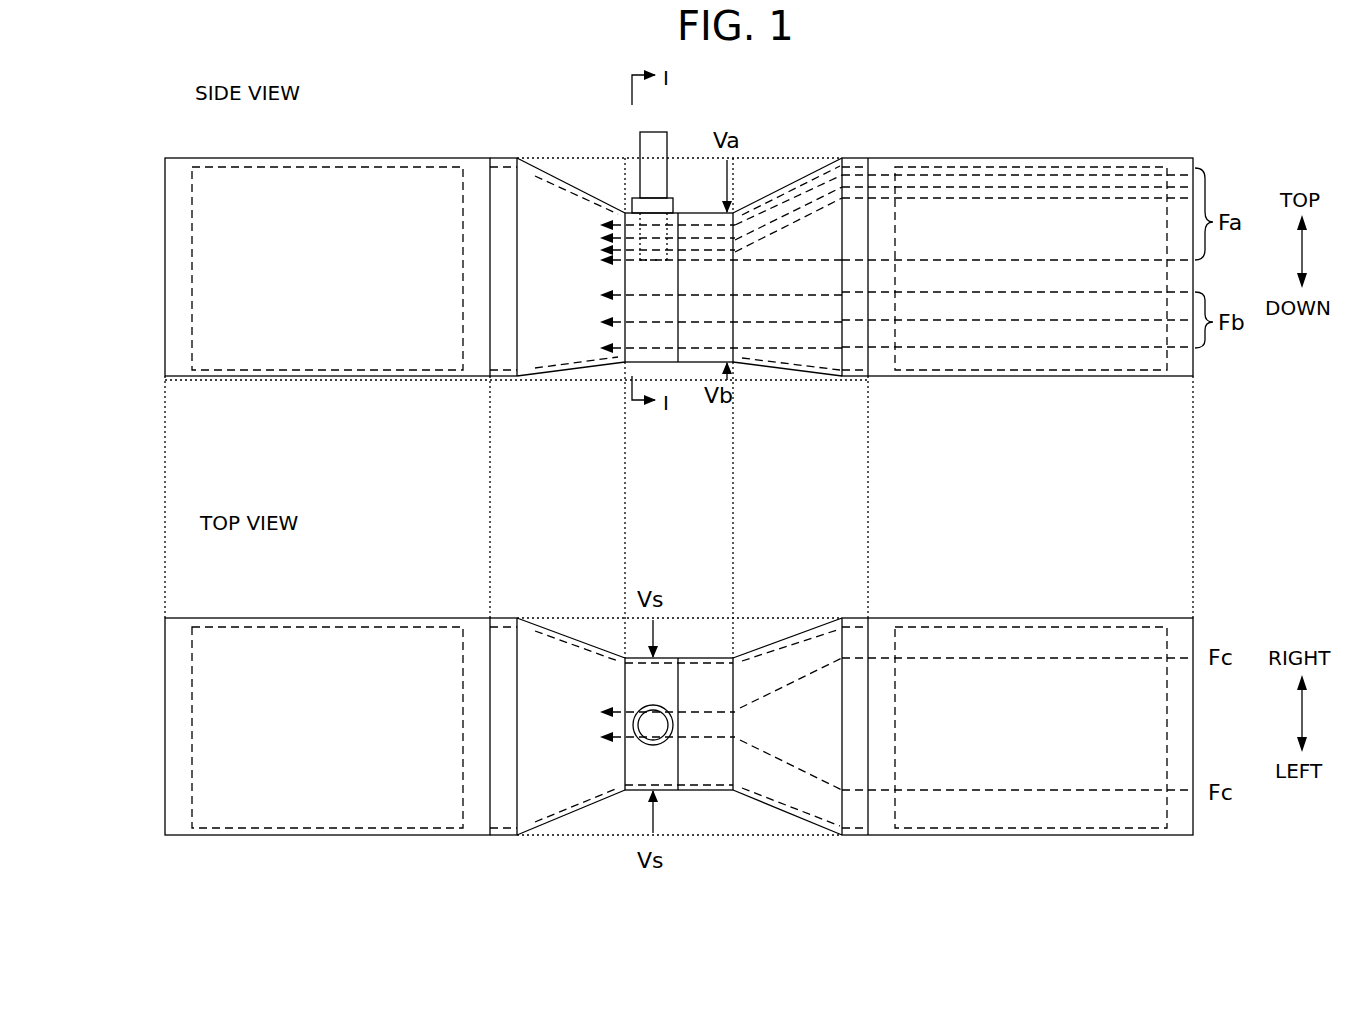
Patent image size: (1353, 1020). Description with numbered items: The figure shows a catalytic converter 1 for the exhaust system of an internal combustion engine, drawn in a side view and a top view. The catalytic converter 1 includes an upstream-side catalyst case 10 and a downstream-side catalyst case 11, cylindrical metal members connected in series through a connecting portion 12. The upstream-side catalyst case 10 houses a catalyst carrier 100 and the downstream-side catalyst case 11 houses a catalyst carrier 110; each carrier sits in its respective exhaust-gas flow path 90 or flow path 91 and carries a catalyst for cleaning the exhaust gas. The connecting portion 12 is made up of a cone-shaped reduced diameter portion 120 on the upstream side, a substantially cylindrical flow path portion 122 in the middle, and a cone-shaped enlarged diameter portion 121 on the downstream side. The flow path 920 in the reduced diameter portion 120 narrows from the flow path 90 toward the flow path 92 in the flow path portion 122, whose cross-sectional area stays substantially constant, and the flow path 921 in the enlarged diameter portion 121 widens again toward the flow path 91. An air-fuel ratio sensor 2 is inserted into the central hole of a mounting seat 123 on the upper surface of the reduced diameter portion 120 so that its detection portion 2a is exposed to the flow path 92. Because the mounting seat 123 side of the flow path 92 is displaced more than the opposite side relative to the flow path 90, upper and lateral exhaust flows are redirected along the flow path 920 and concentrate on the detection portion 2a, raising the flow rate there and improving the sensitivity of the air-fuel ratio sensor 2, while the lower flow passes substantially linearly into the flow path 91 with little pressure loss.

The catalytic converter 1 is at (1214, 116).
The air-fuel ratio sensor 2 is at (648, 421).
The detection portion 2a is at (640, 220).
The upstream-side catalyst case 10 is at (1165, 158).
The catalyst carrier 100 is at (1085, 158).
The downstream-side catalyst case 11 is at (465, 158).
The catalyst carrier 110 is at (378, 158).
The connecting portion 12 is at (703, 486).
The reduced diameter portion 120 is at (790, 373).
The enlarged diameter portion 121 is at (580, 366).
The flow path portion 122 is at (672, 364).
The mounting seat 123 is at (697, 192).
The flow path 90 is at (1051, 268).
The flow path 91 is at (338, 263).
The flow path 92 is at (694, 288).
The flow path 920 is at (813, 288).
The flow path 921 is at (590, 288).